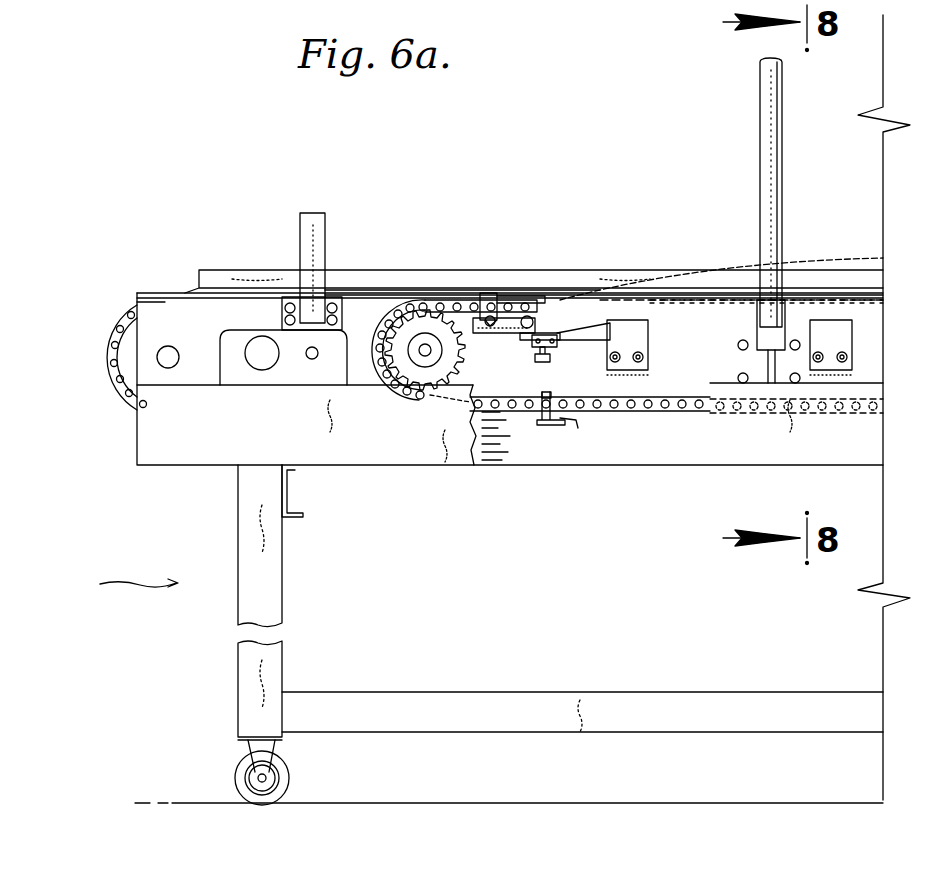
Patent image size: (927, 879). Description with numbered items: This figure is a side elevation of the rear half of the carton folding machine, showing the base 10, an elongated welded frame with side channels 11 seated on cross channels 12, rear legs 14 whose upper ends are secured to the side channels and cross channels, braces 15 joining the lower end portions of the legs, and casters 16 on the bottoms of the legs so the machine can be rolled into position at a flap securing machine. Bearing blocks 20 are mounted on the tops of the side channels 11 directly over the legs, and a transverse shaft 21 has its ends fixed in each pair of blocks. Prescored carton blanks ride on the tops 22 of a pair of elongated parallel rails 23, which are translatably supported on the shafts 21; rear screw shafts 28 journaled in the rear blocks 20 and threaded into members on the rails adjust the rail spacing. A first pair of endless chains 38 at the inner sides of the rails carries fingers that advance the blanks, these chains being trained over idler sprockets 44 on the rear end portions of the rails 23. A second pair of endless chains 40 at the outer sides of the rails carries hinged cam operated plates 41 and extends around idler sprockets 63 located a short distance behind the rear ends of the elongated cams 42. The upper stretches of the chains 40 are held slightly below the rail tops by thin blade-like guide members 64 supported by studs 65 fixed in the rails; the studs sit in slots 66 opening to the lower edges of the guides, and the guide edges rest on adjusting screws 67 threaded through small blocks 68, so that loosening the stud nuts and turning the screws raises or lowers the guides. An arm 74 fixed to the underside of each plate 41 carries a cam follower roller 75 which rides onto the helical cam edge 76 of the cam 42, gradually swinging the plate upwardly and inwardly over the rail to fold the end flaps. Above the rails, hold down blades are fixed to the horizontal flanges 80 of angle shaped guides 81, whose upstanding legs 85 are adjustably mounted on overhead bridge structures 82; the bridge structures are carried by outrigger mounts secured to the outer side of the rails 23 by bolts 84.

The base 10 is at (122, 584).
The side channel 11 is at (140, 434).
The cross channel 12 is at (303, 516).
The rear leg 14 is at (275, 590).
The brace 15 is at (622, 702).
The caster 16 is at (237, 772).
The bearing block 20 is at (286, 372).
The shaft 21 is at (250, 352).
The rail top 22 is at (160, 295).
The rail 23 is at (165, 304).
The screw shaft 28 is at (312, 359).
The endless chain 38 is at (110, 351).
The endless chain 40 is at (630, 425).
The hinged cam operated plate 41 is at (510, 300).
The elongated cam 42 is at (798, 268).
The idler sprocket 44 is at (125, 358).
The idler sprocket 63 is at (432, 366).
The guide member 64 is at (490, 332).
The stud 65 is at (533, 324).
The slot 66 is at (530, 340).
The adjusting screw 67 is at (552, 360).
The block 68 is at (560, 343).
The arm 74 is at (490, 292).
The cam follower roller 75 is at (488, 316).
The cam edge 76 is at (836, 260).
The horizontal flange 80 is at (217, 290).
The angle shaped guide 81 is at (333, 273).
The bridge structure 82 is at (305, 225).
The bolt 84 is at (286, 322).
The upstanding leg 85 is at (369, 273).